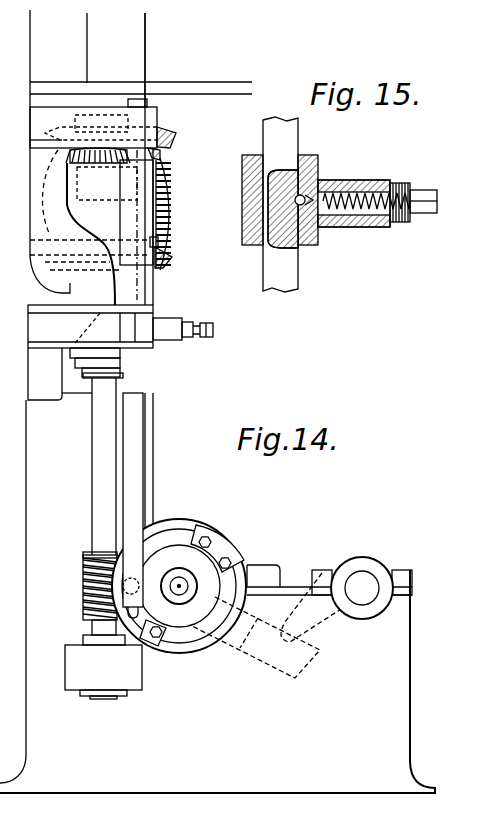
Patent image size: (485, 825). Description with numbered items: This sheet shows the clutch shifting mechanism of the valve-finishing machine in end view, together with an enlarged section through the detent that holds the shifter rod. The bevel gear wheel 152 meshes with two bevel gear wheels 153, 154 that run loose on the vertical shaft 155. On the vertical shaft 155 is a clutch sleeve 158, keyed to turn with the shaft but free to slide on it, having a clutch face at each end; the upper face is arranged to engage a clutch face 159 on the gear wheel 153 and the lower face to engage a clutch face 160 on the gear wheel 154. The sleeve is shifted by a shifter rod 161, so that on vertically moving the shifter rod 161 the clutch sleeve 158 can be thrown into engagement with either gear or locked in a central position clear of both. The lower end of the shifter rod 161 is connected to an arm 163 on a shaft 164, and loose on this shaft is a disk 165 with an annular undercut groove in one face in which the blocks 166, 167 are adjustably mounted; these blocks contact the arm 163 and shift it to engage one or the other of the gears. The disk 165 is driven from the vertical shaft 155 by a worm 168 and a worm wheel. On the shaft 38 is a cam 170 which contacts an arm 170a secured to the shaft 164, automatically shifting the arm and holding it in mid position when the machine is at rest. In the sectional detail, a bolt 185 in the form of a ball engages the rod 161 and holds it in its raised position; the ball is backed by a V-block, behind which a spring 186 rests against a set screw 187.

In FIG. 14, the shaft 38 is at (362, 588).
In FIG. 14, the bevel gear wheel 152 is at (172, 190).
In FIG. 14, the bevel gear wheel 153 is at (170, 138).
In FIG. 14, the bevel gear wheel 154 is at (166, 266).
In FIG. 14, the vertical shaft 155 is at (93, 455).
In FIG. 14, the clutch sleeve 158 is at (98, 165).
In FIG. 14, the clutch face 159 is at (161, 155).
In FIG. 14, the clutch face 160 is at (159, 243).
In FIG. 14, the shifter rod 161 is at (144, 468).
In FIG. 15, the shifter rod 161 is at (282, 204).
In FIG. 14, the arm 163 is at (154, 580).
In FIG. 14, the shaft 164 is at (178, 592).
In FIG. 14, the disk 165 is at (180, 525).
In FIG. 14, the block 166 is at (213, 542).
In FIG. 14, the block 167 is at (153, 642).
In FIG. 14, the worm 168 is at (85, 587).
In FIG. 14, the cam 170 is at (318, 607).
In FIG. 14, the arm 170a is at (290, 665).
In FIG. 15, the bolt 185 is at (323, 226).
In FIG. 15, the spring 186 is at (341, 194).
In FIG. 15, the set screw 187 is at (411, 190).